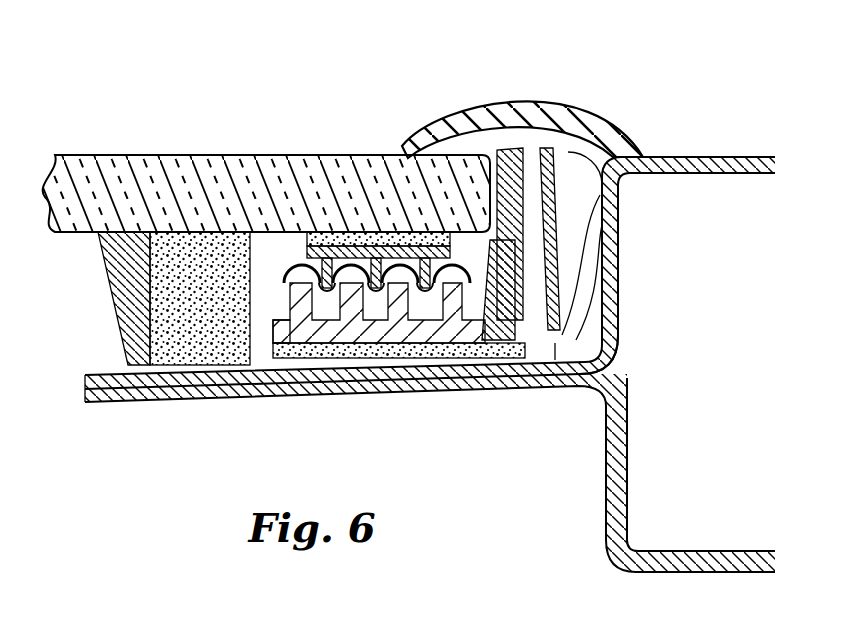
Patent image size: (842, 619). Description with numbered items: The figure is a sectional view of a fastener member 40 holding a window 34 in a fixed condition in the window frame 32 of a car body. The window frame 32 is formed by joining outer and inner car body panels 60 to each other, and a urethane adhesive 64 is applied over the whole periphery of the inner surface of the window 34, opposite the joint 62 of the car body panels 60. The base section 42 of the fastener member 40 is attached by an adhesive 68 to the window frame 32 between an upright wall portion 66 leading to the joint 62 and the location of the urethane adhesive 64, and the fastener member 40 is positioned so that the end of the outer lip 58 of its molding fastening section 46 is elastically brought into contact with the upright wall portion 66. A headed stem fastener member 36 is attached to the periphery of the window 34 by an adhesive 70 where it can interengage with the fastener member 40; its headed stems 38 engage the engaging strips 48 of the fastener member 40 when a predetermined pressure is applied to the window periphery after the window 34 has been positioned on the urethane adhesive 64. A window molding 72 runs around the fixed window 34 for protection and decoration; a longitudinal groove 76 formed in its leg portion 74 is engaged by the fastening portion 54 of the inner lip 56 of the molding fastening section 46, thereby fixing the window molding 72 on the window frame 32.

The window frame 32 is at (682, 542).
The window 34 is at (145, 160).
The headed stem fastener member 36 is at (318, 222).
The headed stems 38 is at (376, 294).
The fastener member 40 is at (556, 347).
The base section 42 is at (425, 335).
The molding fastening section 46 is at (585, 298).
The engaging strips 48 is at (310, 278).
The fastening portion 54 is at (505, 348).
The inner lip 56 is at (497, 245).
The outer lip 58 is at (596, 203).
The car body panels 60 is at (618, 357).
The joint 62 is at (388, 352).
The urethane adhesive 64 is at (175, 366).
The upright wall portion 66 is at (620, 270).
The adhesive 68 is at (318, 362).
The adhesive 70 is at (375, 240).
The window molding 72 is at (612, 98).
The leg portion 74 is at (533, 230).
The groove 76 is at (550, 300).